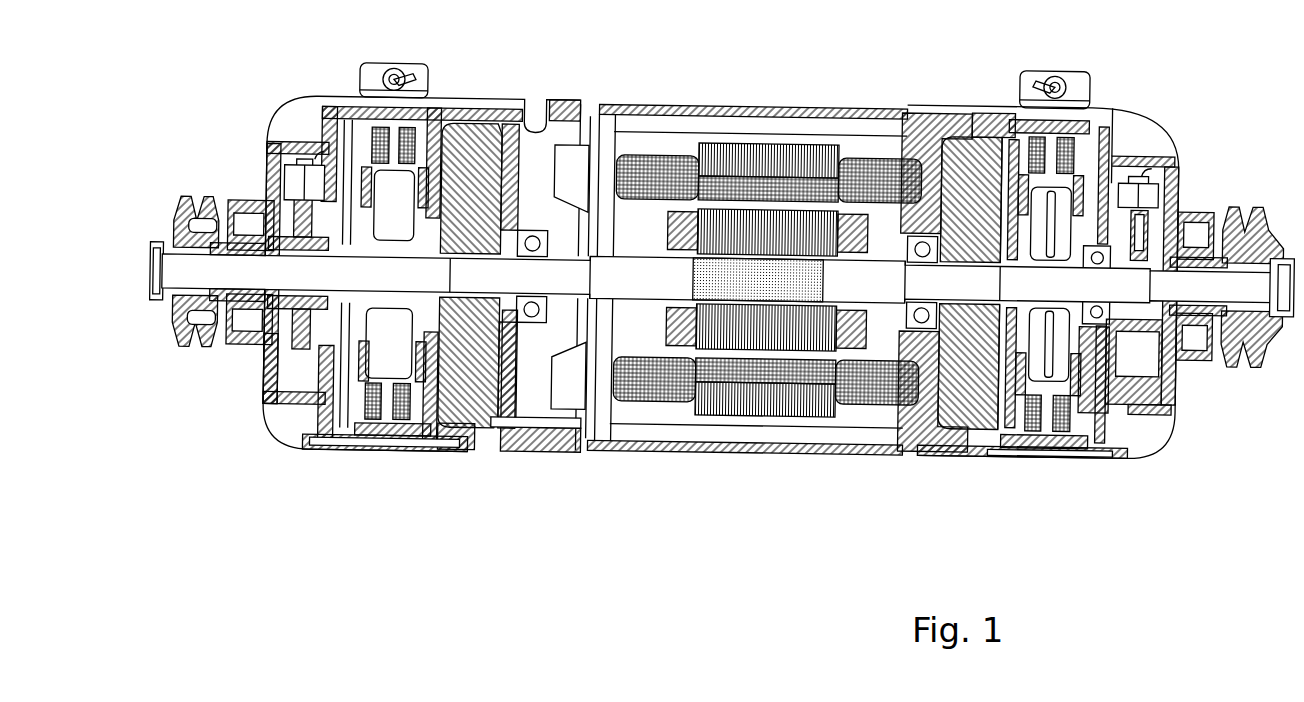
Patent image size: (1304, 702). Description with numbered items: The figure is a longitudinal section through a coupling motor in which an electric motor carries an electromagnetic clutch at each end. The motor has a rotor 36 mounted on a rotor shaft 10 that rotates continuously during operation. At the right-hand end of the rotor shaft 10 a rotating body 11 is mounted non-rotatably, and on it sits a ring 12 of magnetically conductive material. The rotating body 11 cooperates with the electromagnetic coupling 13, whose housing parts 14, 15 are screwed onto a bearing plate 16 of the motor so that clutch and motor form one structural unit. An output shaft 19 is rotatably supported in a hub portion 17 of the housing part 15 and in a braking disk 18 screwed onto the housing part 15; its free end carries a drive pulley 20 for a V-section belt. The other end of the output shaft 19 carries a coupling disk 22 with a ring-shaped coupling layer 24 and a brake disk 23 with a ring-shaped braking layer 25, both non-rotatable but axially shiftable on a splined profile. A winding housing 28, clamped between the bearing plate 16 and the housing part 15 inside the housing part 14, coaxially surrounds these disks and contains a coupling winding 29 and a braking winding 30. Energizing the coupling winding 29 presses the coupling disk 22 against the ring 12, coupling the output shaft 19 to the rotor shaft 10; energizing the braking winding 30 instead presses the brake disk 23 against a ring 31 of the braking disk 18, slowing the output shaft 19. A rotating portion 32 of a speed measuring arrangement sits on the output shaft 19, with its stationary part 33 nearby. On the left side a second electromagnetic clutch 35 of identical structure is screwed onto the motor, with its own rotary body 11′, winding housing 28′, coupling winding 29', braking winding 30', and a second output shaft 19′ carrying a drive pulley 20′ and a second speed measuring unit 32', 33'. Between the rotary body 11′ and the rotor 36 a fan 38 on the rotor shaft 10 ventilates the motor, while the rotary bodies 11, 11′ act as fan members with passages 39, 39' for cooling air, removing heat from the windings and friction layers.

The rotor shaft 10 is at (627, 267).
The rotating body 11 is at (933, 375).
The rotary body 11′ is at (493, 196).
The ring 12 is at (927, 447).
The electromagnetic coupling 13 is at (1110, 85).
The housing part 14 is at (995, 138).
The housing part 15 is at (1177, 165).
The bearing plate 16 is at (955, 455).
The hub portion 17 is at (1183, 257).
The braking disk 18 is at (1130, 152).
The output shaft 19 is at (1218, 283).
The second output shaft 19′ is at (228, 298).
The drive pulley 20 is at (1262, 232).
The drive-belt drive pulley 20′ is at (184, 234).
The coupling disk 22 is at (1047, 345).
The brake disk 23 is at (1053, 344).
The coupling layer 24 is at (1049, 224).
The braking layer 25 is at (1057, 224).
The winding housing 28 is at (1042, 430).
The winding housing 28′ is at (387, 424).
The coupling winding 29 is at (1043, 481).
The coupling winding 29' is at (380, 469).
The braking winding 30 is at (1053, 473).
The braking winding 30' is at (392, 462).
The ring 31 is at (1090, 391).
The rotating portion 32 is at (1162, 375).
The rotating portion 32' is at (242, 375).
The stationary part 33 is at (1179, 188).
The stationary part 33' is at (269, 170).
The second electromagnetic clutch 35 is at (330, 88).
The rotor 36 is at (668, 337).
The fan 38 is at (568, 399).
The passages 39 is at (977, 105).
The passages 39' is at (462, 458).